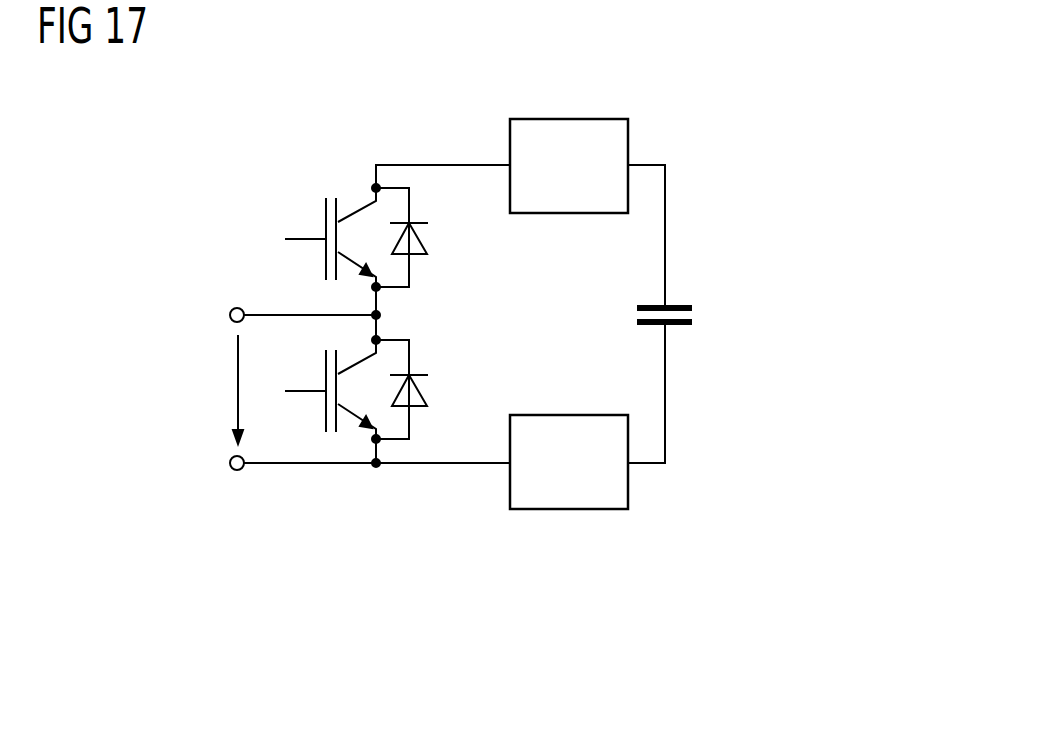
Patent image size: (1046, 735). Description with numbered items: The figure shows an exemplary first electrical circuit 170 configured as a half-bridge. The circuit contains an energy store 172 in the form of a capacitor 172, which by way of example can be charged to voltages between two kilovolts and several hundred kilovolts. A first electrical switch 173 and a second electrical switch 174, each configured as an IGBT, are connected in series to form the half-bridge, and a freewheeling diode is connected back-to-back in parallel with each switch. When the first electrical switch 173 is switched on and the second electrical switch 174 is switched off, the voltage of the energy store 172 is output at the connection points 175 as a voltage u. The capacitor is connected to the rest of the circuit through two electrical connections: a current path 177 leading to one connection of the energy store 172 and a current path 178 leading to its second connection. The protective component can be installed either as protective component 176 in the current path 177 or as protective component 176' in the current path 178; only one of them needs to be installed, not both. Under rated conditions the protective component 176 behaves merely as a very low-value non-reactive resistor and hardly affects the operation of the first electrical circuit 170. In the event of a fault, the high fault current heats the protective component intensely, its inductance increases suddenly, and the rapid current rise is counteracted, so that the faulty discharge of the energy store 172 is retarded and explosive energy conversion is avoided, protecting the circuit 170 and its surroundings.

The first electrical circuit 170 is at (674, 110).
The energy store 172 is at (683, 308).
The first electrical switch 173 is at (326, 216).
The second electrical switch 174 is at (326, 368).
The connection points 175 is at (230, 316).
The protective component 176 is at (569, 124).
The protective component 176' is at (569, 509).
The current path 177 is at (447, 165).
The current path 178 is at (450, 470).